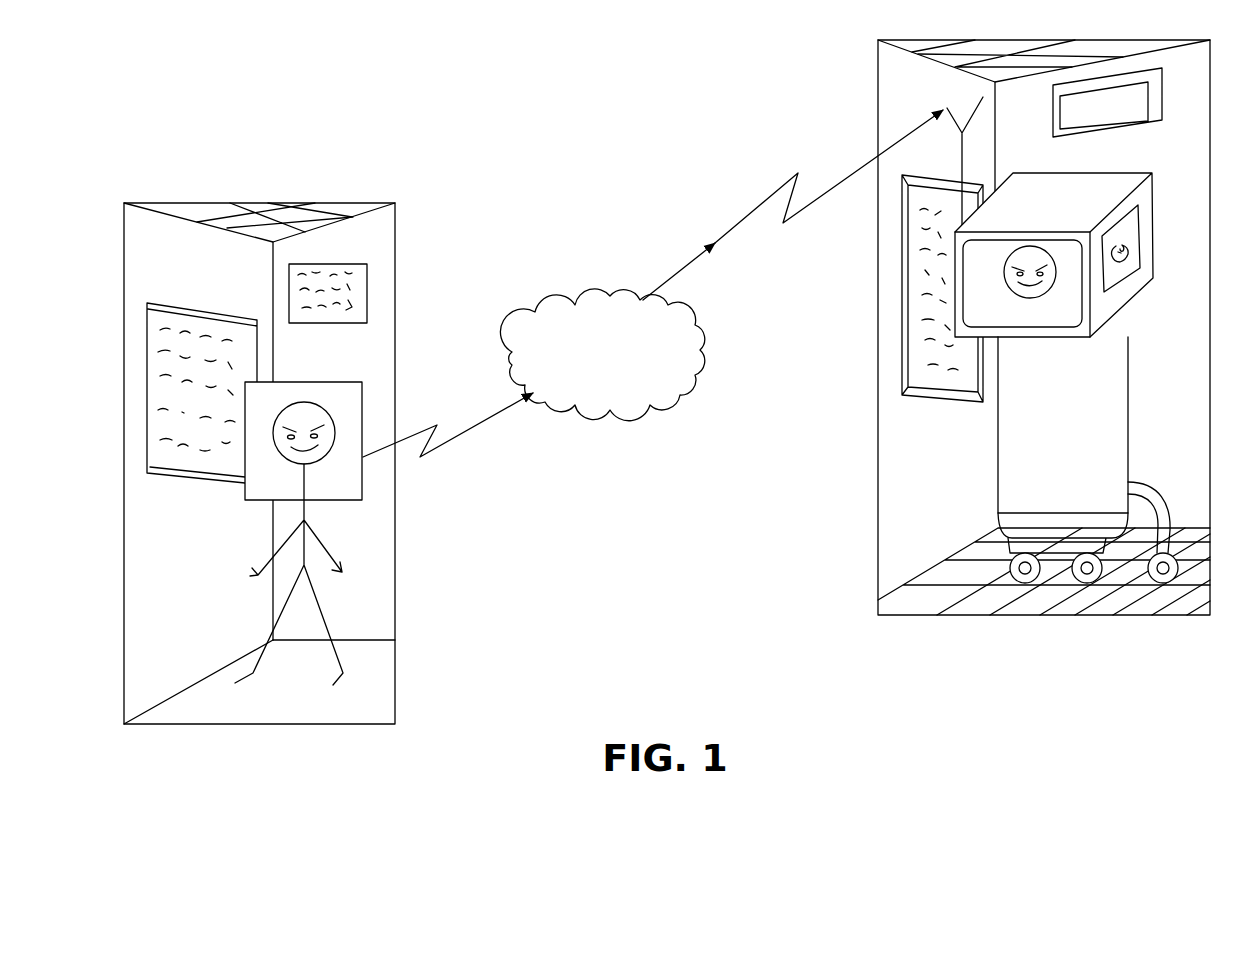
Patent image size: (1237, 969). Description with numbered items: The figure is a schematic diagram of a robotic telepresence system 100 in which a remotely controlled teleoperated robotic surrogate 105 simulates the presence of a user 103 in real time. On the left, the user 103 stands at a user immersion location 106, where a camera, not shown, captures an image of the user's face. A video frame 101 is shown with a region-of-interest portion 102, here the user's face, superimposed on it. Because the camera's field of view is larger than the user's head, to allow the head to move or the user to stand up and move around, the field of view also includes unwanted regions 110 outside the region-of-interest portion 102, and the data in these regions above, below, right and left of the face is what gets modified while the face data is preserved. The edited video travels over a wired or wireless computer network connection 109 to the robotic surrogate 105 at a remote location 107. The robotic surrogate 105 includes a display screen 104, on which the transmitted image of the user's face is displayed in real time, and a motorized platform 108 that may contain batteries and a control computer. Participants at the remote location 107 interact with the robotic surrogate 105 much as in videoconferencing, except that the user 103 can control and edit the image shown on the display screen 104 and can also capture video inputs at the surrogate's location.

The robotic telepresence system 100 is at (647, 51).
The video frame 101 is at (396, 282).
The region-of-interest portion 102 is at (312, 382).
The user 103 is at (328, 613).
The display screen 104 is at (1013, 318).
The robotic surrogate 105 is at (1064, 340).
The user immersion location 106 is at (260, 203).
The remote location 107 is at (1040, 40).
The motorized platform 108 is at (998, 478).
The computer network connection 109 is at (587, 364).
The unwanted regions 110 is at (206, 278).